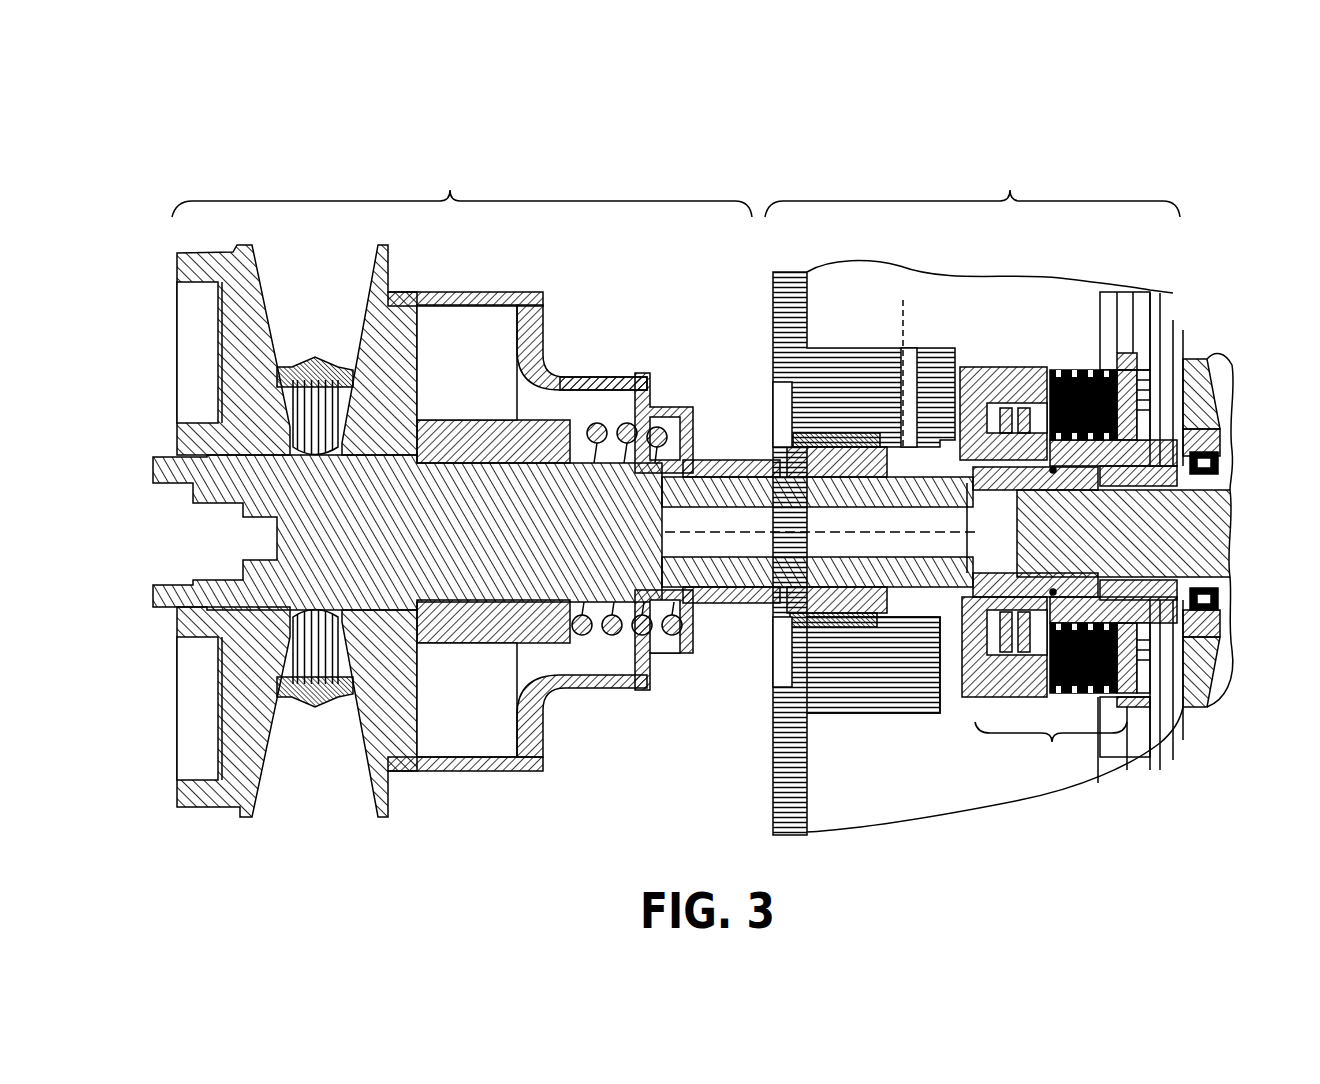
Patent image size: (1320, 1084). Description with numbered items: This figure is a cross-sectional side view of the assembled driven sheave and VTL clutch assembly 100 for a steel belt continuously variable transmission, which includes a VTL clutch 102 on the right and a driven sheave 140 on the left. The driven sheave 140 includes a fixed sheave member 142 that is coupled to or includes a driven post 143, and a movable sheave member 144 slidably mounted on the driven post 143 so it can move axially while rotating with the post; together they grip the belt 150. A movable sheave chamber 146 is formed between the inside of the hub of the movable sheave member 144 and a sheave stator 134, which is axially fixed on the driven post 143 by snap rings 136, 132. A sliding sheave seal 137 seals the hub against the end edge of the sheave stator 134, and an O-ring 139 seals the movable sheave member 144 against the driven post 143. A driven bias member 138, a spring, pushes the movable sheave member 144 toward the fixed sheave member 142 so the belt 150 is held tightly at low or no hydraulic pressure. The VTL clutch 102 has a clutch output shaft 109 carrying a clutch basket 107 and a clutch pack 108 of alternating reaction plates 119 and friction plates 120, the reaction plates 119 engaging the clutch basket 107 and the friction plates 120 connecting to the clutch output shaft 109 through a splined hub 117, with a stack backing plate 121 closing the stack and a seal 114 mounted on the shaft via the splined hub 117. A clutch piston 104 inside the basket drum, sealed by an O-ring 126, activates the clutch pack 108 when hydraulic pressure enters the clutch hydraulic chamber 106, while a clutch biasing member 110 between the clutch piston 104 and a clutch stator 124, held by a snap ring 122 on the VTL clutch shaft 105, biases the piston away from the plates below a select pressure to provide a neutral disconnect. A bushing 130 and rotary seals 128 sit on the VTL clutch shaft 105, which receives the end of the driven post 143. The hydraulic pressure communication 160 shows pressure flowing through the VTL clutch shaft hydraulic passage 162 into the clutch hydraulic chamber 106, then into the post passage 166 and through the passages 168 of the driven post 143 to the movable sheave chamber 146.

The driven sheave and VTL clutch assembly 100 is at (308, 128).
The VTL clutch 102 is at (972, 189).
The clutch piston 104 is at (990, 415).
The VTL clutch shaft 105 is at (805, 605).
The clutch hydraulic chamber 106 is at (943, 462).
The clutch basket 107 is at (982, 640).
The clutch pack 108 is at (1051, 745).
The clutch output shaft 109 is at (1205, 512).
The clutch biasing member 110 is at (1005, 425).
The seal 114 is at (1210, 618).
The splined hub 117 is at (1192, 655).
The reaction plates 119 is at (1137, 420).
The friction plates 120 is at (1100, 430).
The stack backing plate 121 is at (1165, 397).
The snap ring 122 is at (1018, 575).
The clutch stator 124 is at (1066, 372).
The O-ring 126 is at (1005, 660).
The rotary seals 128 is at (843, 625).
The bushing 130 is at (790, 680).
The snap ring 132 is at (757, 475).
The sheave stator 134 is at (570, 377).
The snap ring 136 is at (660, 430).
The sliding sheave seal 137 is at (527, 305).
The driven bias member 138 is at (633, 440).
The O-ring 139 is at (558, 605).
The driven sheave 140 is at (462, 189).
The fixed sheave member 142 is at (236, 795).
The driven post 143 is at (310, 565).
The movable sheave member 144 is at (378, 748).
The movable sheave chamber 146 is at (492, 350).
The belt 150 is at (328, 362).
The hydraulic pressure communication 160 is at (900, 350).
The VTL clutch shaft hydraulic passage 162 is at (900, 460).
The post passage 166 is at (765, 600).
The passages 168 is at (668, 470).